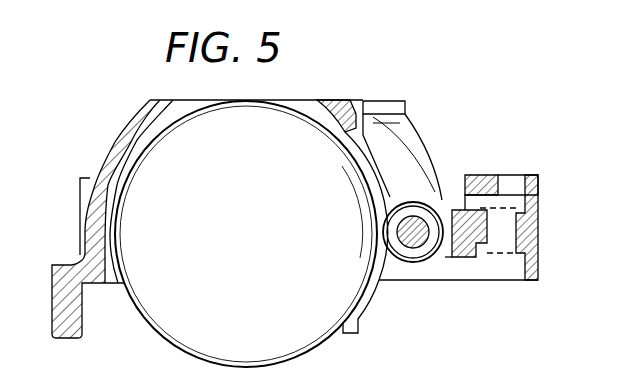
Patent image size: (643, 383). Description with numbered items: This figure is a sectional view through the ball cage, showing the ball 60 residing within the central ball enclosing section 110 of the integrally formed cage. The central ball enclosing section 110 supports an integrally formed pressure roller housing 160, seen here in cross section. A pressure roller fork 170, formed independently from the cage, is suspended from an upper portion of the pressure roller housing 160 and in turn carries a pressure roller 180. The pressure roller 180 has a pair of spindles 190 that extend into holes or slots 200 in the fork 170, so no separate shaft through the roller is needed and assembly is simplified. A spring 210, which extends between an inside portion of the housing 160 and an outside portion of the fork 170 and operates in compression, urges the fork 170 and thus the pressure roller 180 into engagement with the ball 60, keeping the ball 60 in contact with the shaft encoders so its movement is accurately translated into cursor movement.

The ball 60 is at (173, 350).
The central ball enclosing section 110 is at (125, 130).
The pressure roller housing 160 is at (534, 176).
The pressure roller fork 170 is at (480, 252).
The pressure roller 180 is at (407, 263).
The spindles 190 is at (423, 243).
The holes or slots 200 is at (432, 172).
The spring 210 is at (540, 262).